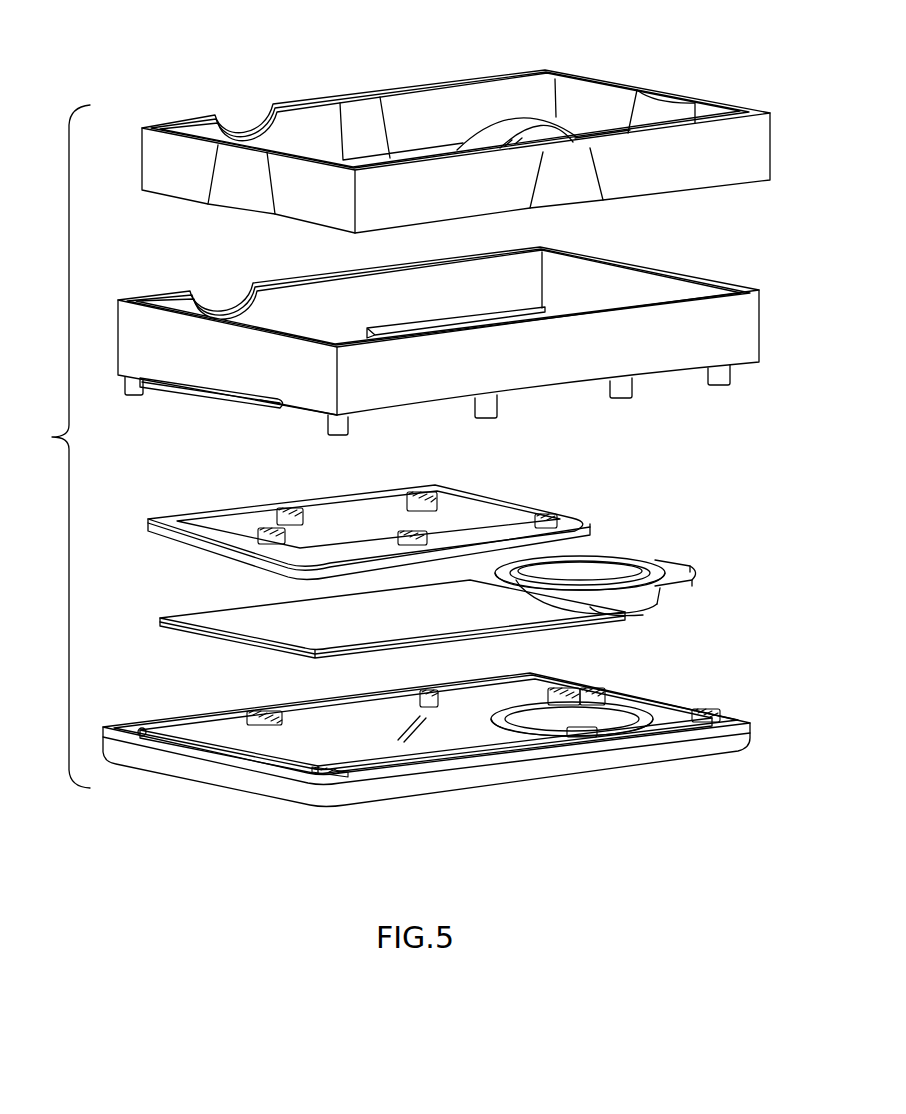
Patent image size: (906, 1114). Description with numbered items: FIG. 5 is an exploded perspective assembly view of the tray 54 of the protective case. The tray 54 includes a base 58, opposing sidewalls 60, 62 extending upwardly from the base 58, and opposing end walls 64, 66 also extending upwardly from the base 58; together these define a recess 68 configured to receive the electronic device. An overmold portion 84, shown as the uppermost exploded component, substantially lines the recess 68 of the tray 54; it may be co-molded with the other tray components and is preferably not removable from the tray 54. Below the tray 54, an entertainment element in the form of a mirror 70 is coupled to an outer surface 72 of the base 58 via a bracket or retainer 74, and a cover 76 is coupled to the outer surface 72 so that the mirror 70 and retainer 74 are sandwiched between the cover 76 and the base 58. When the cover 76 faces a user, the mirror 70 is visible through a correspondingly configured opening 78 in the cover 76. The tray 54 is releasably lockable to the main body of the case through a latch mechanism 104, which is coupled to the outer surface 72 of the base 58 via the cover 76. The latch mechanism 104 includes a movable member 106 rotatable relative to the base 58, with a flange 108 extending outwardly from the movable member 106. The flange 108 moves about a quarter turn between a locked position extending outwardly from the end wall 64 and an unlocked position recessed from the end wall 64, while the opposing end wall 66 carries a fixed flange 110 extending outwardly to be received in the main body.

The tray 54 is at (54, 446).
The base 58 is at (447, 343).
The sidewall 60 is at (577, 360).
The sidewall 62 is at (355, 298).
The end wall 64 is at (693, 292).
The end wall 66 is at (242, 368).
The recess 68 is at (545, 309).
The mirror 70 is at (205, 632).
The outer surface 72 is at (297, 412).
The retainer 74 is at (172, 535).
The cover 76 is at (426, 765).
The opening 78 is at (398, 741).
The overmold portion 84 is at (703, 90).
The latch mechanism 104 is at (632, 575).
The movable member 106 is at (632, 608).
The flange 108 is at (692, 584).
The fixed flange 110 is at (172, 392).